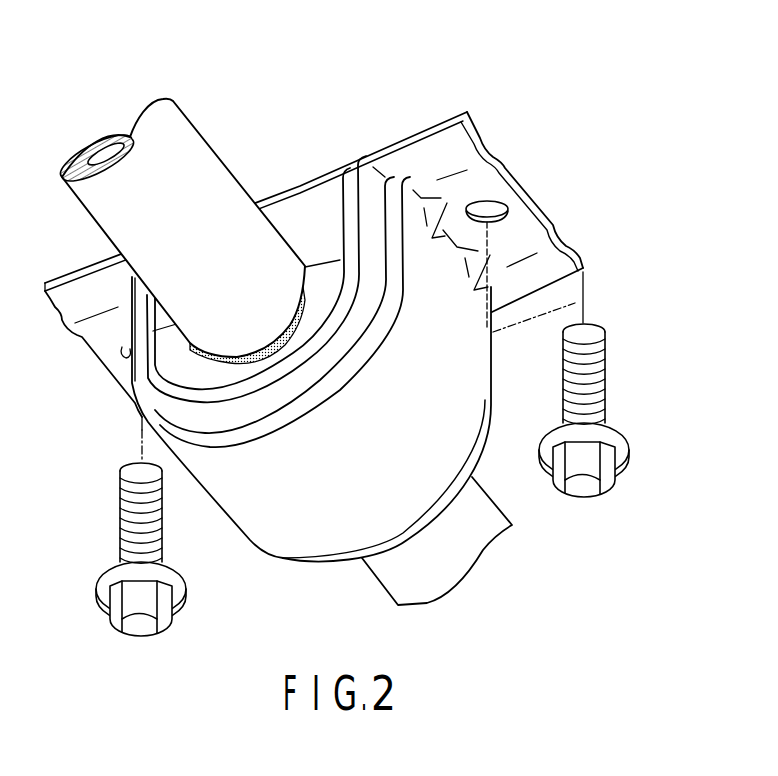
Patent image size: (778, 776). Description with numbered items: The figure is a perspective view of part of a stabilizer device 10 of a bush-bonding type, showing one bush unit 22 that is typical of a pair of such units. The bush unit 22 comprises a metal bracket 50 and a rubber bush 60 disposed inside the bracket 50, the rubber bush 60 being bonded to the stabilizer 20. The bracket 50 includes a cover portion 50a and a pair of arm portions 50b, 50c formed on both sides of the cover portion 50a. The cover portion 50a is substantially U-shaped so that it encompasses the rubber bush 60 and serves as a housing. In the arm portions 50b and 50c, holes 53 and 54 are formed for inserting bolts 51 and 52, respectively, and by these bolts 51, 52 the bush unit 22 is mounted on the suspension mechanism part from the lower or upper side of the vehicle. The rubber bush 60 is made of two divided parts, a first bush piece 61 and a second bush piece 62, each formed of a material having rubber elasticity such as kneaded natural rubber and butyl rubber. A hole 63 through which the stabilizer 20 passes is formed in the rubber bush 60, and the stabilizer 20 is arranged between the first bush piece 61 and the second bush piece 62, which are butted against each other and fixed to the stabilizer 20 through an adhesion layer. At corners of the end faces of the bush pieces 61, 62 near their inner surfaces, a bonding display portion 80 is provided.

The stabilizer device 10 is at (98, 122).
The stabilizer 20 is at (200, 133).
The bush unit 22 is at (310, 573).
The bracket 50 is at (477, 458).
The cover portion 50a is at (263, 517).
The arm portion 50b is at (532, 220).
The arm portion 50c is at (100, 344).
The bolt 51 is at (604, 400).
The bolt 52 is at (121, 529).
The hole 53 is at (506, 222).
The hole 54 is at (128, 366).
The rubber bush 60 is at (325, 165).
The first bush piece 61 is at (297, 203).
The second bush piece 62 is at (310, 313).
The hole 63 is at (297, 289).
The bonding display portion 80 is at (257, 365).